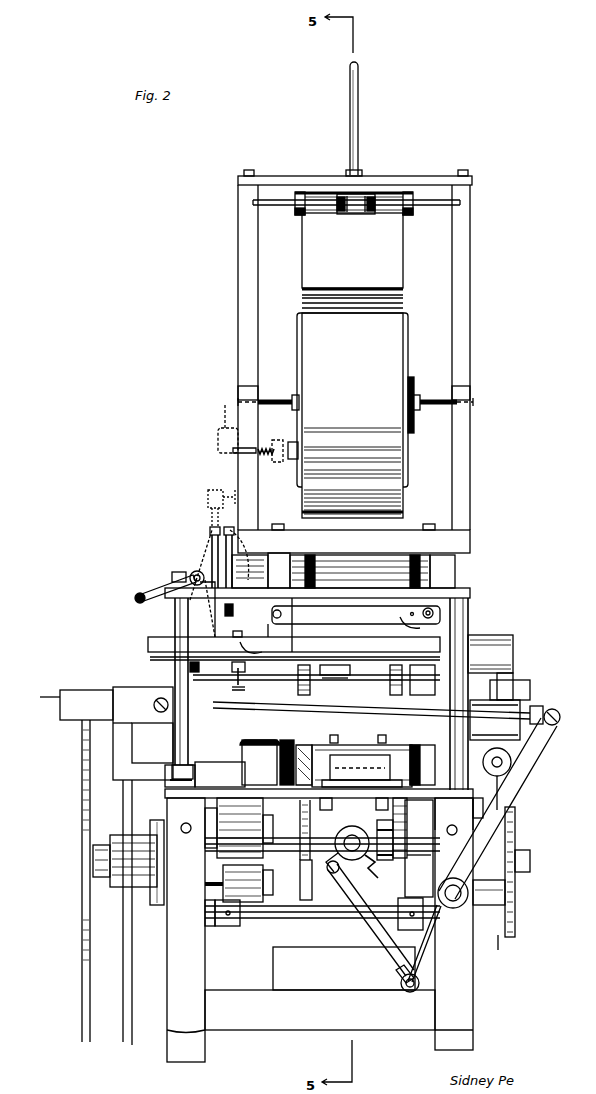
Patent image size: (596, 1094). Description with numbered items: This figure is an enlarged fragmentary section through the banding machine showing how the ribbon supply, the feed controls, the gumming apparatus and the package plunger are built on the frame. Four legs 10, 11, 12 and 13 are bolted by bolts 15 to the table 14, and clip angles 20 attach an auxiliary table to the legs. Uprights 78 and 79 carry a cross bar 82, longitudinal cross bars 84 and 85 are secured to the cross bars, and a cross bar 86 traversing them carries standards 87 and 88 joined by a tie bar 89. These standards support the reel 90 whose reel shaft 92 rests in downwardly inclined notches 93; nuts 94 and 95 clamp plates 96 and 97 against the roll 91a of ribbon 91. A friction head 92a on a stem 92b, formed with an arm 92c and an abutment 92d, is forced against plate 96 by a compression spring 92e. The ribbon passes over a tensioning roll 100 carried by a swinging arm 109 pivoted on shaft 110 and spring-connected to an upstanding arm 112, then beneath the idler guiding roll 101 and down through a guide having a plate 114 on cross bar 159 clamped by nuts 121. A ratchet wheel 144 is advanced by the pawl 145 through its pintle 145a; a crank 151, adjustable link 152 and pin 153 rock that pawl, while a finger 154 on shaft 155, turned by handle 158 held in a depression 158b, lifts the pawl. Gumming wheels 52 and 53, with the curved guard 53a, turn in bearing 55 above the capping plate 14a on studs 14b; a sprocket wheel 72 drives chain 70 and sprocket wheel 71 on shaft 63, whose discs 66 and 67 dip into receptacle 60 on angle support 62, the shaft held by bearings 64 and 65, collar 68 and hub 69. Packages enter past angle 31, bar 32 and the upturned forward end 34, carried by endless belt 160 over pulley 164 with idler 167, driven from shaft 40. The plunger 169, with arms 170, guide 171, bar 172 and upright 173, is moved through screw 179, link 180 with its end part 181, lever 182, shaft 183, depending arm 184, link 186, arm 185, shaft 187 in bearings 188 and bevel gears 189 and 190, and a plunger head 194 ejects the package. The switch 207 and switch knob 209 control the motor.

The upstanding arm 112 is at (358, 82).
The tie bar 89 is at (440, 178).
The standard 87 is at (250, 252).
The standard 88 is at (472, 290).
The shaft 110 is at (440, 205).
The tensioning roll 100 is at (402, 190).
The swinging arm 109 is at (358, 214).
The ribbon 91 is at (398, 246).
The roll 91a is at (325, 297).
The reel 90 is at (410, 300).
The plate 96 is at (298, 335).
The plate 97 is at (408, 334).
The reel shaft 92 is at (445, 405).
The nut 94 is at (295, 394).
The nut 95 is at (418, 394).
The downwardly inclined notches 93 is at (245, 387).
The abutment 92d is at (232, 428).
The arm 92c is at (222, 447).
The stem 92b is at (262, 447).
The friction head 92a is at (298, 445).
The compression spring 92e is at (265, 462).
The cross bar 86 is at (390, 540).
The longitudinal cross bar 85 is at (278, 552).
The idler guiding roll 101 is at (395, 560).
The longitudinal cross bar 84 is at (445, 565).
The cross bar 82 is at (475, 592).
The upright 79 is at (178, 673).
The upright 78 is at (468, 625).
The nuts 121 is at (435, 613).
The plate 114 is at (305, 625).
The cross bar 159 is at (421, 626).
The ratchet wheel 144 is at (236, 610).
The finger 154 is at (210, 555).
The pawl 145 is at (212, 528).
The ratchet engaging pintle 145a is at (237, 548).
The shaft 155 is at (195, 572).
The handle 158 is at (152, 585).
The depression 158b is at (200, 660).
The curved guard 53a is at (355, 668).
The wheel 53 is at (300, 690).
The wheel 52 is at (412, 700).
The upright 173 is at (282, 690).
The link 180 is at (238, 704).
The knob 181 is at (560, 713).
The adjustable link 152 is at (530, 745).
The crank 151 is at (505, 662).
The sprocket wheel 72 is at (513, 770).
The lever 182 is at (525, 785).
The depending arm 184 is at (420, 972).
The bar 32 is at (290, 752).
The plate 14a is at (340, 700).
The studs 14b is at (345, 728).
The plunger head 194 is at (360, 740).
The bearing 55 is at (430, 740).
The forward end 34 is at (255, 740).
The guide 171 is at (120, 690).
The track or bar 172 is at (65, 700).
The arms 170 is at (120, 733).
The screw 179 is at (168, 705).
The switch knob 209 is at (93, 862).
The switch 207 is at (150, 893).
The angle 31 is at (196, 780).
The plunger 169 is at (245, 772).
The table 14 is at (319, 816).
The leg 13 is at (182, 1000).
The leg 12 is at (182, 1035).
The leg 10 is at (475, 1000).
The leg 11 is at (475, 1032).
The angle support 62 is at (250, 1032).
The receptacle 60 is at (320, 985).
The clip angles 20 is at (470, 826).
The bolts 15 is at (483, 812).
The endless belt 160 is at (215, 850).
The arm 185 is at (318, 838).
The pulley 164 is at (222, 878).
The idler 167 is at (222, 886).
The disc 66 is at (300, 880).
The shaft 63 is at (258, 925).
The collar 68 is at (228, 930).
The bearing 65 is at (205, 935).
The shaft 187 is at (352, 826).
The link 186 is at (380, 955).
The bevel gear 189 is at (365, 858).
The bearings 188 is at (407, 812).
The bevel gear 190 is at (393, 824).
The shaft 40 is at (418, 860).
The bearing 64 is at (440, 904).
The hub 69 is at (422, 925).
The disc 67 is at (425, 940).
The chain 70 is at (530, 860).
The pin 153 is at (530, 870).
The shaft 183 is at (470, 890).
The sprocket wheel 71 is at (498, 935).